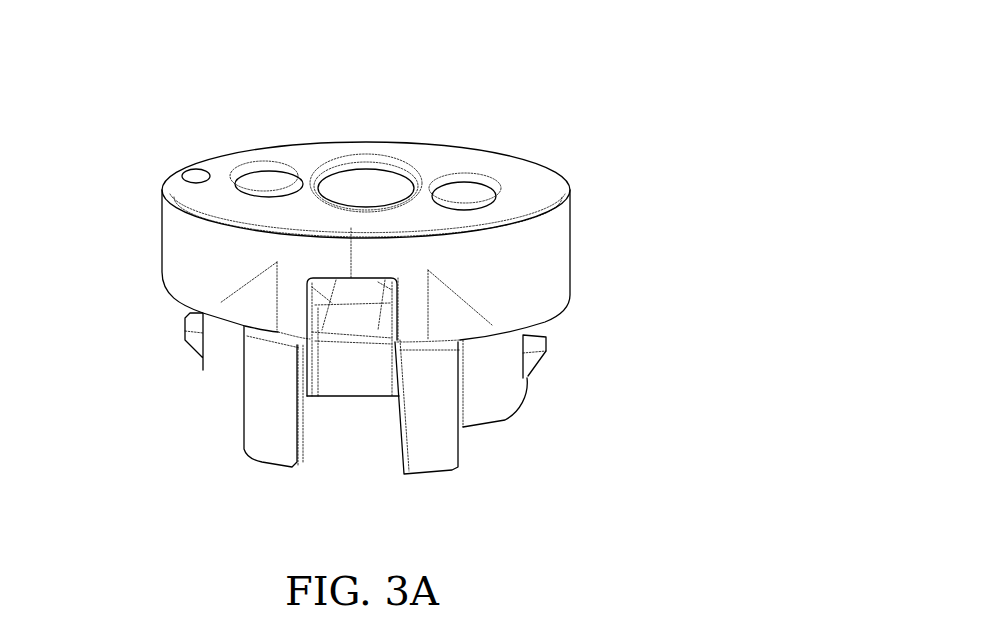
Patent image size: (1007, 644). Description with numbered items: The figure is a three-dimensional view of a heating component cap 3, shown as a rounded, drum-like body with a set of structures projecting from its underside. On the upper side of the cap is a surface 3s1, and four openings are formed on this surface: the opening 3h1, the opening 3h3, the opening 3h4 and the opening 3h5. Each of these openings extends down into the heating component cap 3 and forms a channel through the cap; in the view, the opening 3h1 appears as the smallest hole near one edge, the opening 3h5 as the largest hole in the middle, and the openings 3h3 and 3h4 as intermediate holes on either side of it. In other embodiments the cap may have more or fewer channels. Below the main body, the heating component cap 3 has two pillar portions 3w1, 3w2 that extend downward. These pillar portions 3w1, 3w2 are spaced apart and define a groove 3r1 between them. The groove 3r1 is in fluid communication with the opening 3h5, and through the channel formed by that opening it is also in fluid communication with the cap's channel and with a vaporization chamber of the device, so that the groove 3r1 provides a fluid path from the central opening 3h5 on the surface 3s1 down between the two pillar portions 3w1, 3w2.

The heating component cap 3 is at (421, 296).
The surface 3s1 is at (533, 198).
The opening 3h1 is at (193, 174).
The opening 3h3 is at (273, 186).
The opening 3h4 is at (472, 198).
The opening 3h5 is at (373, 205).
The groove 3r1 is at (350, 382).
The pillar portion 3w1 is at (265, 424).
The pillar portion 3w2 is at (440, 442).